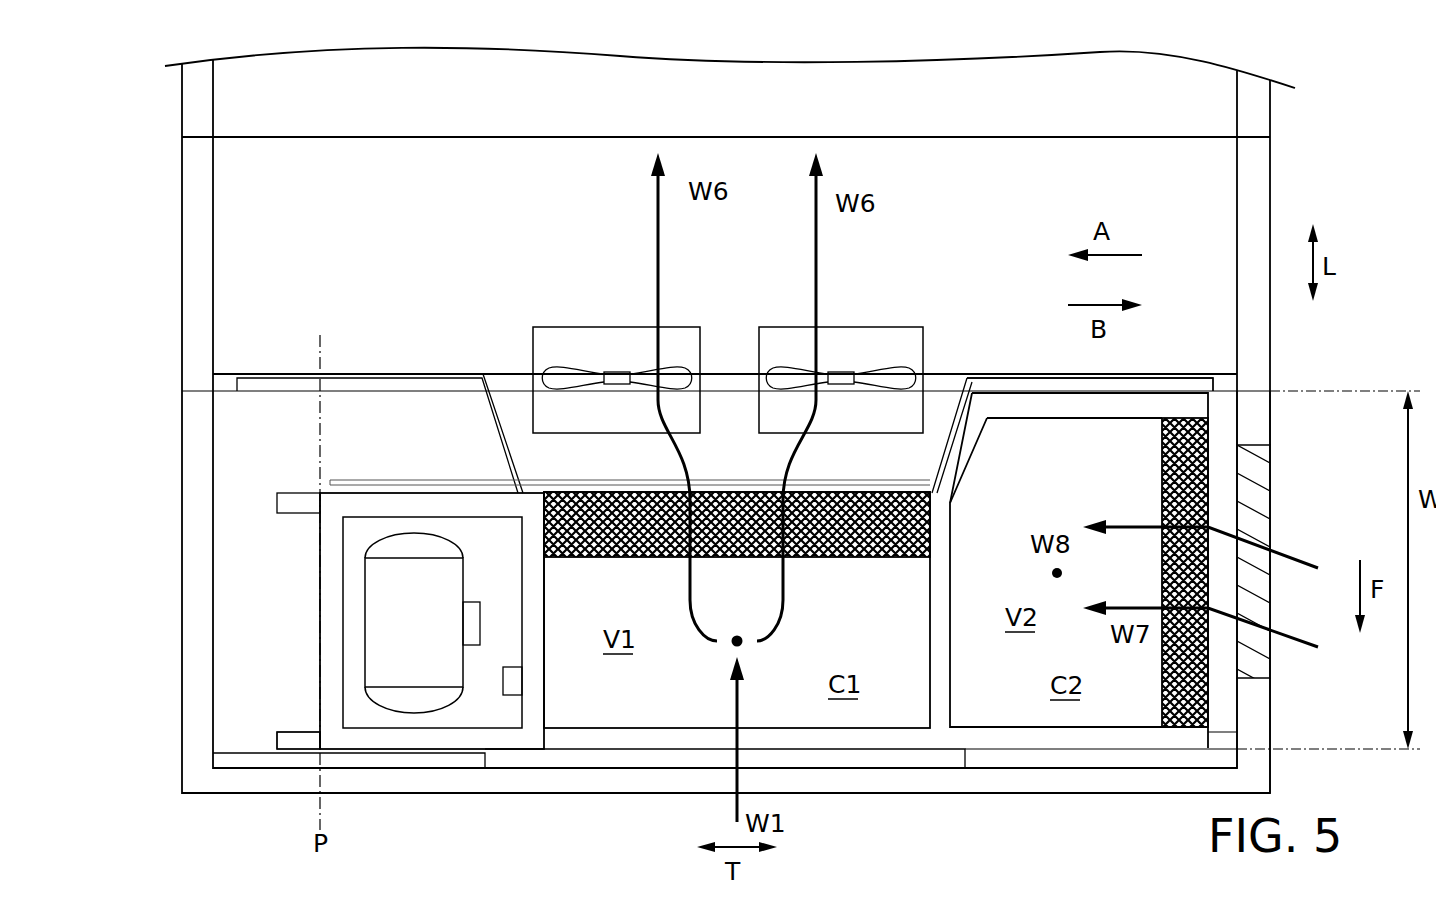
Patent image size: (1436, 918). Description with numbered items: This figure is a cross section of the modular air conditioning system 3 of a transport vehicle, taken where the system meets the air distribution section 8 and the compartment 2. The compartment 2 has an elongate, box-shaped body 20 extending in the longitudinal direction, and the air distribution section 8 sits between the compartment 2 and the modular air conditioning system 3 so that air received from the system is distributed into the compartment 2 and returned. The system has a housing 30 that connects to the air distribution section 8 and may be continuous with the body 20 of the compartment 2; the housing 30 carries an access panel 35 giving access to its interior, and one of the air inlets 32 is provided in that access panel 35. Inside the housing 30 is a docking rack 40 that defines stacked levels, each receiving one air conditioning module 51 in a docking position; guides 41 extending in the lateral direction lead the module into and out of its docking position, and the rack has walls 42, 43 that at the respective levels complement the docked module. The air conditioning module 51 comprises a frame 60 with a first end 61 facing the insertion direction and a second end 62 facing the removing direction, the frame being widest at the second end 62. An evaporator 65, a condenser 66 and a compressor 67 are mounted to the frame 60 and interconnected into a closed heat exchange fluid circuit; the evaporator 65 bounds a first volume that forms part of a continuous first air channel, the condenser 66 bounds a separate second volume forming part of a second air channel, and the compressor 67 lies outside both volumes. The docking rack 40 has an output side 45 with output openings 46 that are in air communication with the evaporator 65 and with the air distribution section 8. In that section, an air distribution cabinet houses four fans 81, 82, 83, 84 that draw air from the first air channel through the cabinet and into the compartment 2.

The compartment 2 is at (360, 98).
The modular air conditioning system 3 is at (150, 733).
The air distribution section 8 is at (142, 172).
The body 20 is at (190, 96).
The housing 30 is at (185, 598).
The air inlet 32 is at (1262, 655).
The access panel 35 is at (1260, 428).
The docking rack 40 is at (402, 760).
The guides 41 is at (293, 742).
The wall 42 is at (1017, 388).
The wall 43 is at (395, 388).
The output side 45 is at (950, 400).
The output opening 46 is at (858, 485).
The air conditioning module 51 is at (867, 740).
The frame 60 is at (425, 635).
The first end 61 is at (335, 628).
The second end 62 is at (1258, 503).
The evaporator 65 is at (870, 530).
The condenser 66 is at (1162, 467).
The compressor 67 is at (413, 575).
The fan 81 is at (849, 341).
The fan 82 is at (862, 345).
The fan 83 is at (590, 329).
The fan 84 is at (553, 345).